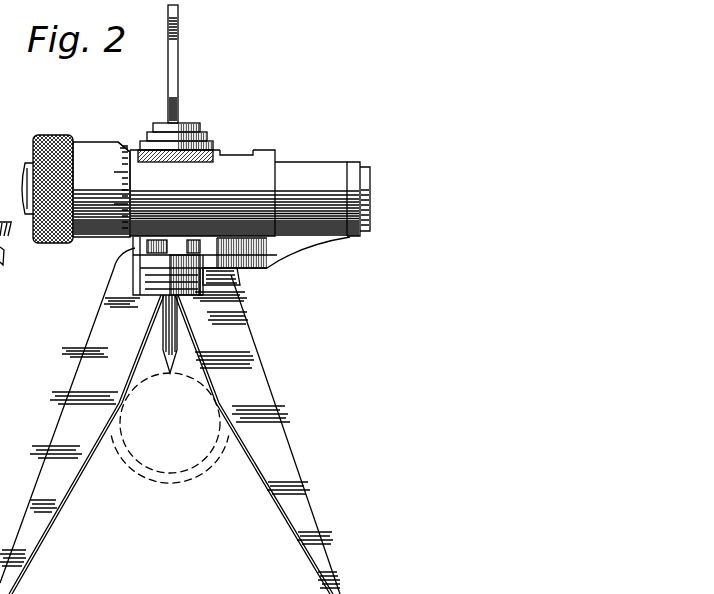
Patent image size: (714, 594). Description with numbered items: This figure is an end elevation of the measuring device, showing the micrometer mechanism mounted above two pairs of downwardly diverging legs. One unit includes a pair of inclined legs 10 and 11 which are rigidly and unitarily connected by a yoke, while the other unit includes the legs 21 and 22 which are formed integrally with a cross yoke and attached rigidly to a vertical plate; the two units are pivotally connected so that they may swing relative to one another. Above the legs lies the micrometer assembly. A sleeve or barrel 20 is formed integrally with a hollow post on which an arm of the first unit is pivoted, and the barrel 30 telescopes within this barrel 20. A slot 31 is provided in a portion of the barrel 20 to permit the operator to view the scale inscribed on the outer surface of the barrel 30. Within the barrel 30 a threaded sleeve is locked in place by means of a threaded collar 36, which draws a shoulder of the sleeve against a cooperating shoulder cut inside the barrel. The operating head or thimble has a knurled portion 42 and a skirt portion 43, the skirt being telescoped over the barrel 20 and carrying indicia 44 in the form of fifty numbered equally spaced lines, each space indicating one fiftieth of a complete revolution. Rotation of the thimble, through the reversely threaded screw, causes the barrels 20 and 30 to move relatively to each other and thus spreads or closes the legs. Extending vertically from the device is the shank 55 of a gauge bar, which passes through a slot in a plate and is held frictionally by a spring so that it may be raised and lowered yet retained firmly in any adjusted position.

The inclined leg 10 is at (297, 480).
The inclined leg 11 is at (275, 512).
The sleeve or barrel 20 is at (215, 150).
The leg 21 is at (43, 470).
The leg 22 is at (65, 503).
The barrel 30 is at (298, 163).
The slot 31 is at (250, 150).
The threaded collar 36 is at (352, 162).
The knurled portion 42 is at (50, 136).
The skirt portion 43 is at (95, 142).
The indicia 44 is at (125, 143).
The vertical shank 55 is at (178, 33).